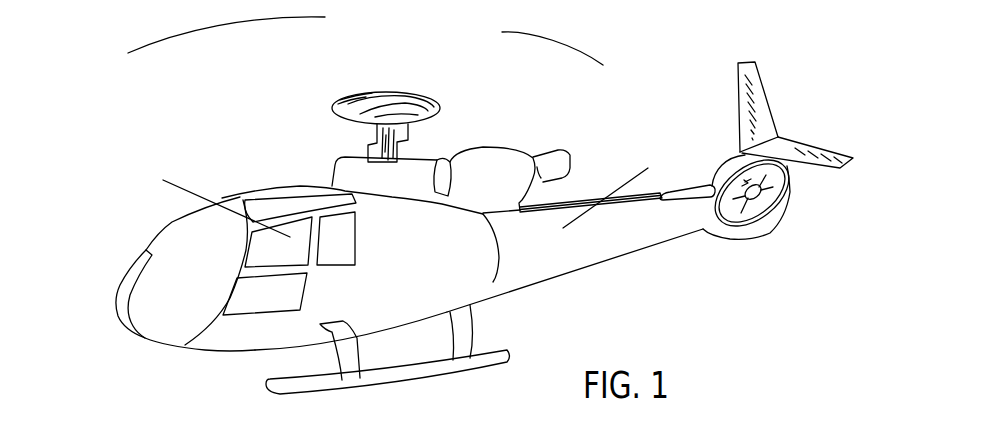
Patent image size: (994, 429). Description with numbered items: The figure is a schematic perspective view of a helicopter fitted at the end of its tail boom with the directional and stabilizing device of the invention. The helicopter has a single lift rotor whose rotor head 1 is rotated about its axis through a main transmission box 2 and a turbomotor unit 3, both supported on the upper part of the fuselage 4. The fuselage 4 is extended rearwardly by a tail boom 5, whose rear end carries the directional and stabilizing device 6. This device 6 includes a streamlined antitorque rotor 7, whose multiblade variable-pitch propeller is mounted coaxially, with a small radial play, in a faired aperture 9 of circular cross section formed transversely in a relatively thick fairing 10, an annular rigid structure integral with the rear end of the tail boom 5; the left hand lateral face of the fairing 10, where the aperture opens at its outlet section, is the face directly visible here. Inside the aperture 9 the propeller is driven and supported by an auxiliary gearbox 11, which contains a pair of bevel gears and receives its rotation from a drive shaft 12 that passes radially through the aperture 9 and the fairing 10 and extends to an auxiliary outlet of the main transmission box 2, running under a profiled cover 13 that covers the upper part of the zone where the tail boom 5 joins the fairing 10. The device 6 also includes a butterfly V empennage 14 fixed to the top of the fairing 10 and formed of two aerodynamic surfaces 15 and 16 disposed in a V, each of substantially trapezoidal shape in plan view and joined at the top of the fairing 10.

The rotor head 1 is at (372, 90).
The main transmission box 2 is at (415, 175).
The turbomotor unit 3 is at (497, 160).
The fuselage 4 is at (457, 270).
The tail boom 5 is at (603, 238).
The directional and stabilizing device 6 is at (769, 226).
The streamlined antitorque rotor 7 is at (767, 193).
The faired aperture 9 is at (736, 210).
The fairing 10 is at (731, 168).
The auxiliary gearbox 11 is at (755, 197).
The drive shaft 12 is at (588, 203).
The profiled cover 13 is at (690, 190).
The V empennage 14 is at (780, 130).
The first aerodynamic surface 15 is at (827, 150).
The second aerodynamic surface 16 is at (757, 107).